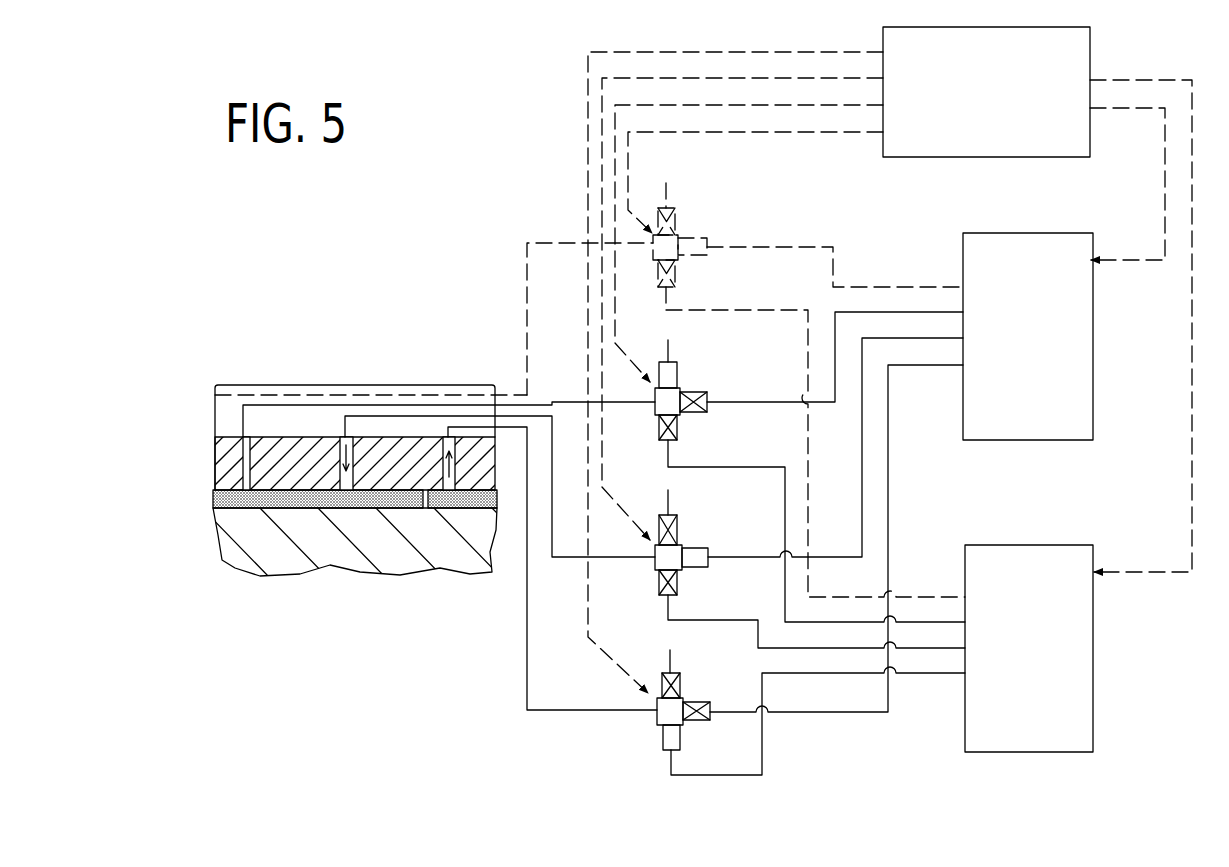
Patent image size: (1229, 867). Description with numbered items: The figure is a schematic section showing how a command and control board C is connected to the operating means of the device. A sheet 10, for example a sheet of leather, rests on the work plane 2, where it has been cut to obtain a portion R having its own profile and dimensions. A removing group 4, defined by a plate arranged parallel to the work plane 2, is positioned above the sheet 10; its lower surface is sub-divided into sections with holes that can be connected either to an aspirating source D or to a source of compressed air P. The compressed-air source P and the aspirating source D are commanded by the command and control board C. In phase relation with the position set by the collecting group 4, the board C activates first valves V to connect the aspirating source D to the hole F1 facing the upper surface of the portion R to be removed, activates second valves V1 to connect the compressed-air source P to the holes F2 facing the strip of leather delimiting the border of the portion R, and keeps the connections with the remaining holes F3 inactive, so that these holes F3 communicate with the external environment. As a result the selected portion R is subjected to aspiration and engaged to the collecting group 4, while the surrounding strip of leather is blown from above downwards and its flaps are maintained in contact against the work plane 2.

The work plane 2 is at (352, 560).
The removing group 4 is at (213, 477).
The sheet 10 is at (232, 508).
The portion R is at (465, 500).
The hole F1 is at (447, 437).
The holes F2 is at (343, 437).
The remaining holes F3 is at (245, 460).
The first valves V is at (665, 715).
The second valves V1 is at (695, 545).
The command and control board C is at (996, 109).
The compressed-air source P is at (1034, 355).
The aspirating source D is at (1040, 668).